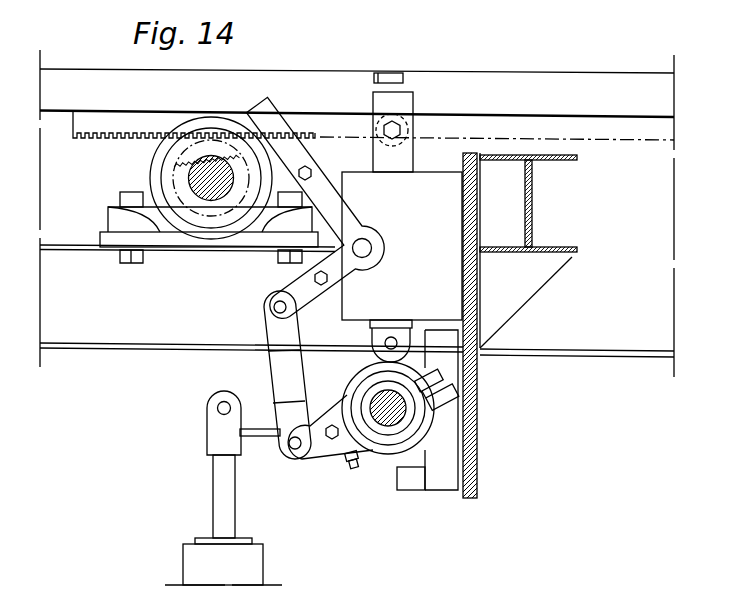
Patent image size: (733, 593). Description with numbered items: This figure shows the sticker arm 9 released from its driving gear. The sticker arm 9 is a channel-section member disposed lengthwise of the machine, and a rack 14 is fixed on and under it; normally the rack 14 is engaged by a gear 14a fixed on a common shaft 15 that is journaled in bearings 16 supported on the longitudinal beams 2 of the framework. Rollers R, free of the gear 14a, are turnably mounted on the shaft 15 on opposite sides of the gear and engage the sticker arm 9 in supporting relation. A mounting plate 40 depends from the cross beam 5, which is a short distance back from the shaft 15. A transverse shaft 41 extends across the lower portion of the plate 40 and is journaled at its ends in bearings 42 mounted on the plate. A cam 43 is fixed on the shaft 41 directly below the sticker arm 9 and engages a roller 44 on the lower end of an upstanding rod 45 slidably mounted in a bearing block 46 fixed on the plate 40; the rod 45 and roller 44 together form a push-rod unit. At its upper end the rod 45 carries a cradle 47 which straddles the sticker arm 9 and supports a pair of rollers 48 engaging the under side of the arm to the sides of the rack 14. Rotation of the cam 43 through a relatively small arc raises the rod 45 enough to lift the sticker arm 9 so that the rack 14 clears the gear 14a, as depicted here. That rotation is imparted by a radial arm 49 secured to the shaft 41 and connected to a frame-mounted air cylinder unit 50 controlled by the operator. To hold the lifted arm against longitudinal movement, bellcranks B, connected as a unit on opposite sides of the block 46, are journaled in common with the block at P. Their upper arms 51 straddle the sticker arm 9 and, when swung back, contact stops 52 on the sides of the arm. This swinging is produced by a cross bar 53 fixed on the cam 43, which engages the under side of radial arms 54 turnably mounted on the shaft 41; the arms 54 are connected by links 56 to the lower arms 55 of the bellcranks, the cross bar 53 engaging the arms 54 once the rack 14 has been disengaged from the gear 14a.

The longitudinal beams 2 is at (68, 325).
The transverse beam 5 is at (535, 204).
The sticker arm 9 is at (568, 92).
The rack 14 is at (100, 133).
The gear 14a is at (190, 142).
The shaft 15 is at (207, 200).
The bearings 16 is at (152, 217).
The mounting plate 40 is at (474, 362).
The transverse shaft 41 is at (407, 402).
The bearings 42 is at (412, 482).
The cam 43 is at (433, 433).
The roller 44 is at (373, 356).
The rod 45 is at (395, 320).
The bearing block 46 is at (442, 207).
The cradle 47 is at (408, 99).
The rollers 48 is at (405, 119).
The radial arm 49 is at (216, 391).
The air cylinder unit 50 is at (206, 498).
The upper arms 51 is at (267, 118).
The stops 52 is at (389, 73).
The cross bar 53 is at (350, 468).
The radial arms 54 is at (328, 449).
The lower arms 55 is at (295, 285).
The links 56 is at (285, 371).
The bellcranks B is at (366, 219).
The pivot P is at (366, 247).
The rollers R is at (173, 225).